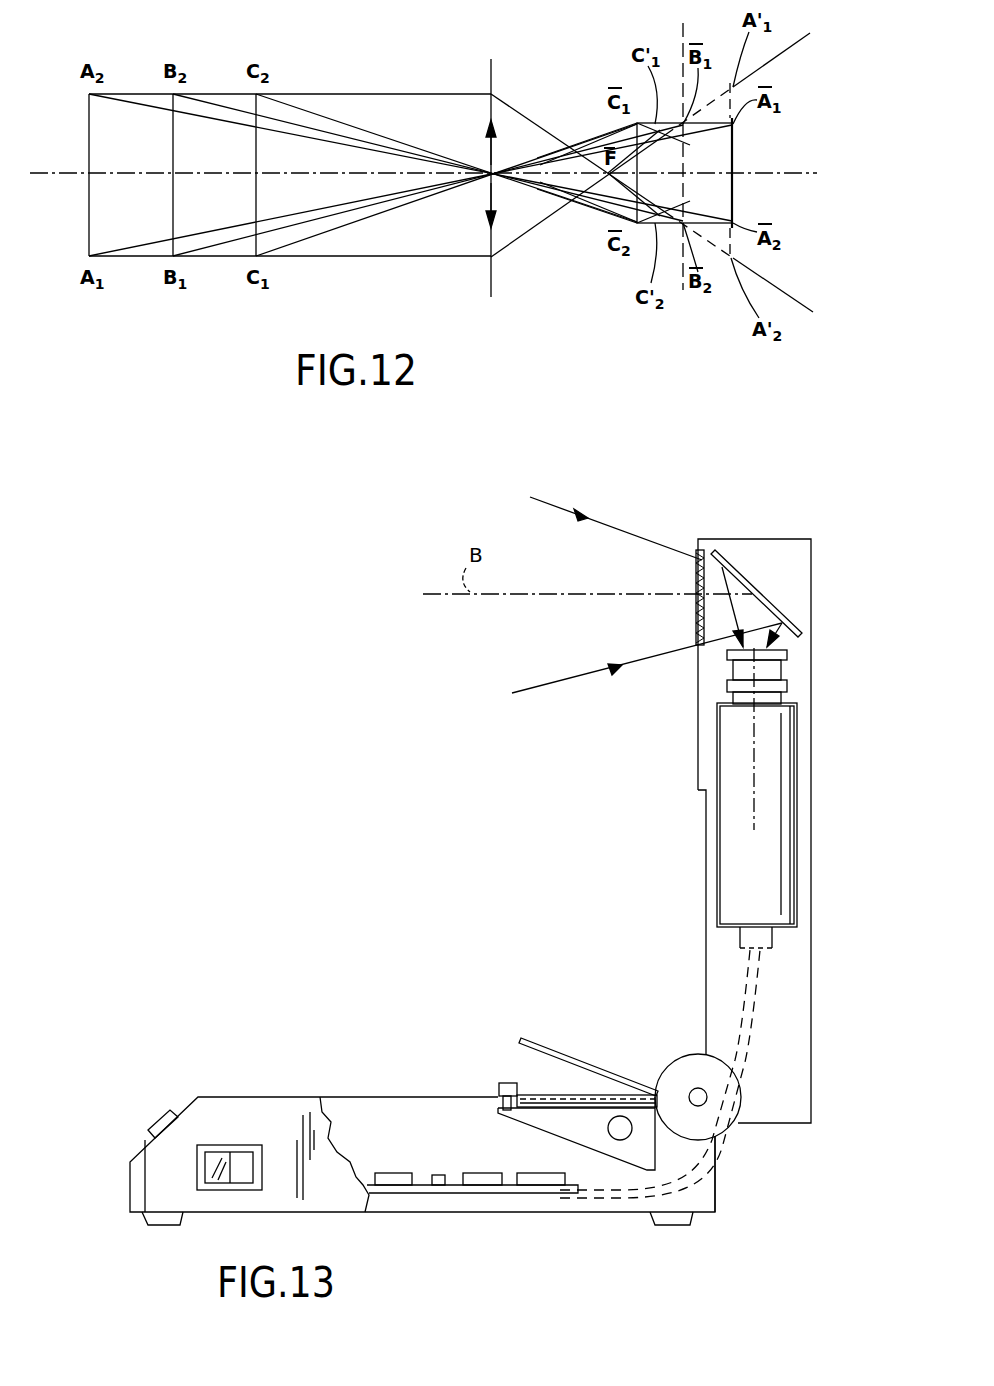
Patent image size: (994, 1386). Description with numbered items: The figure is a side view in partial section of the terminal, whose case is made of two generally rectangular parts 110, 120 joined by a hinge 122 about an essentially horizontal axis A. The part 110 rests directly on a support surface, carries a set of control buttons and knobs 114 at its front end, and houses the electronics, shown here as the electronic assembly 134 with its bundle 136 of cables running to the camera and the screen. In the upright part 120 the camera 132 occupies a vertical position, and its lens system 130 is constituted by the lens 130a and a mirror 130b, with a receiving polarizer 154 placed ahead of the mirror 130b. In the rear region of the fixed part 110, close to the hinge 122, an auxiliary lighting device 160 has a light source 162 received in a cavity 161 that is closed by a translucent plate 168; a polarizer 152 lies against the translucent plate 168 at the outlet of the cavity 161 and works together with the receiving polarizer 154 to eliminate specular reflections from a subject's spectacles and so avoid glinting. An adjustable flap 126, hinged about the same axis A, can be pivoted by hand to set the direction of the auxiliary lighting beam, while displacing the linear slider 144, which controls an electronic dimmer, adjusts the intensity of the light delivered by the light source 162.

The part of the case 110 is at (273, 1070).
The set of control buttons and knobs 114 is at (160, 1122).
The part of the case 120 is at (713, 825).
The hinge 122 is at (668, 1078).
The adjustable flap 126 is at (550, 1045).
The lens system 130 is at (813, 656).
The lens 130a is at (735, 672).
The mirror 130b is at (748, 580).
The camera 132 is at (730, 907).
The electronic assembly 134 is at (463, 1200).
The bundle of cables 136 is at (716, 1170).
The linear slider 144 is at (498, 1088).
The polarizer 152 is at (533, 1096).
The receiving polarizer 154 is at (695, 615).
The auxiliary lighting device 160 is at (510, 1012).
The cavity 161 is at (548, 1130).
The light source 162 is at (620, 1140).
The translucent plate 168 is at (590, 1098).
The axis A is at (697, 1090).